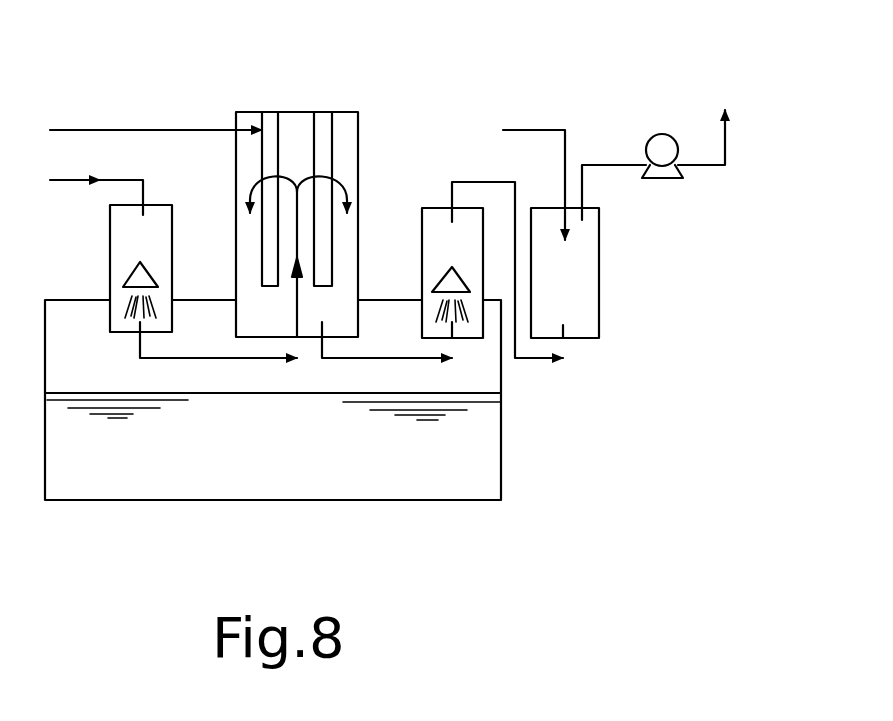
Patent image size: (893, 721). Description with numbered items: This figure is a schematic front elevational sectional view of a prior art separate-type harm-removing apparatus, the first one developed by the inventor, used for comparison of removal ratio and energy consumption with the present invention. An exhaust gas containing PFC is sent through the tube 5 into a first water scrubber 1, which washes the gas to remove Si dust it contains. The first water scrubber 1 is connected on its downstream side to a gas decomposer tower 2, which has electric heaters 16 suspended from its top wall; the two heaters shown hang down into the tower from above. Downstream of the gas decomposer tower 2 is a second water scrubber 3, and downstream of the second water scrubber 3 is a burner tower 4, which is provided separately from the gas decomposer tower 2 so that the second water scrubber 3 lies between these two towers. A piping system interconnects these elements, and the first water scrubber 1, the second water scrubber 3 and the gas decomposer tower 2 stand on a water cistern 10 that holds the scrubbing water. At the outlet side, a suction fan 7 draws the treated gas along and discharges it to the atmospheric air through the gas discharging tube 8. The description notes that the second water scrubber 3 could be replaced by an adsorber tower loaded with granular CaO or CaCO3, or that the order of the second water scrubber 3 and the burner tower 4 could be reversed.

The first water scrubber 1 is at (153, 203).
The gas decomposer tower 2 is at (251, 191).
The second water scrubber 3 is at (430, 200).
The burner tower 4 is at (567, 273).
The tube 5 is at (68, 183).
The suction fan 7 is at (657, 143).
The gas discharging tube 8 is at (728, 147).
The water cistern 10 is at (472, 455).
The electric heaters 16 is at (272, 218).